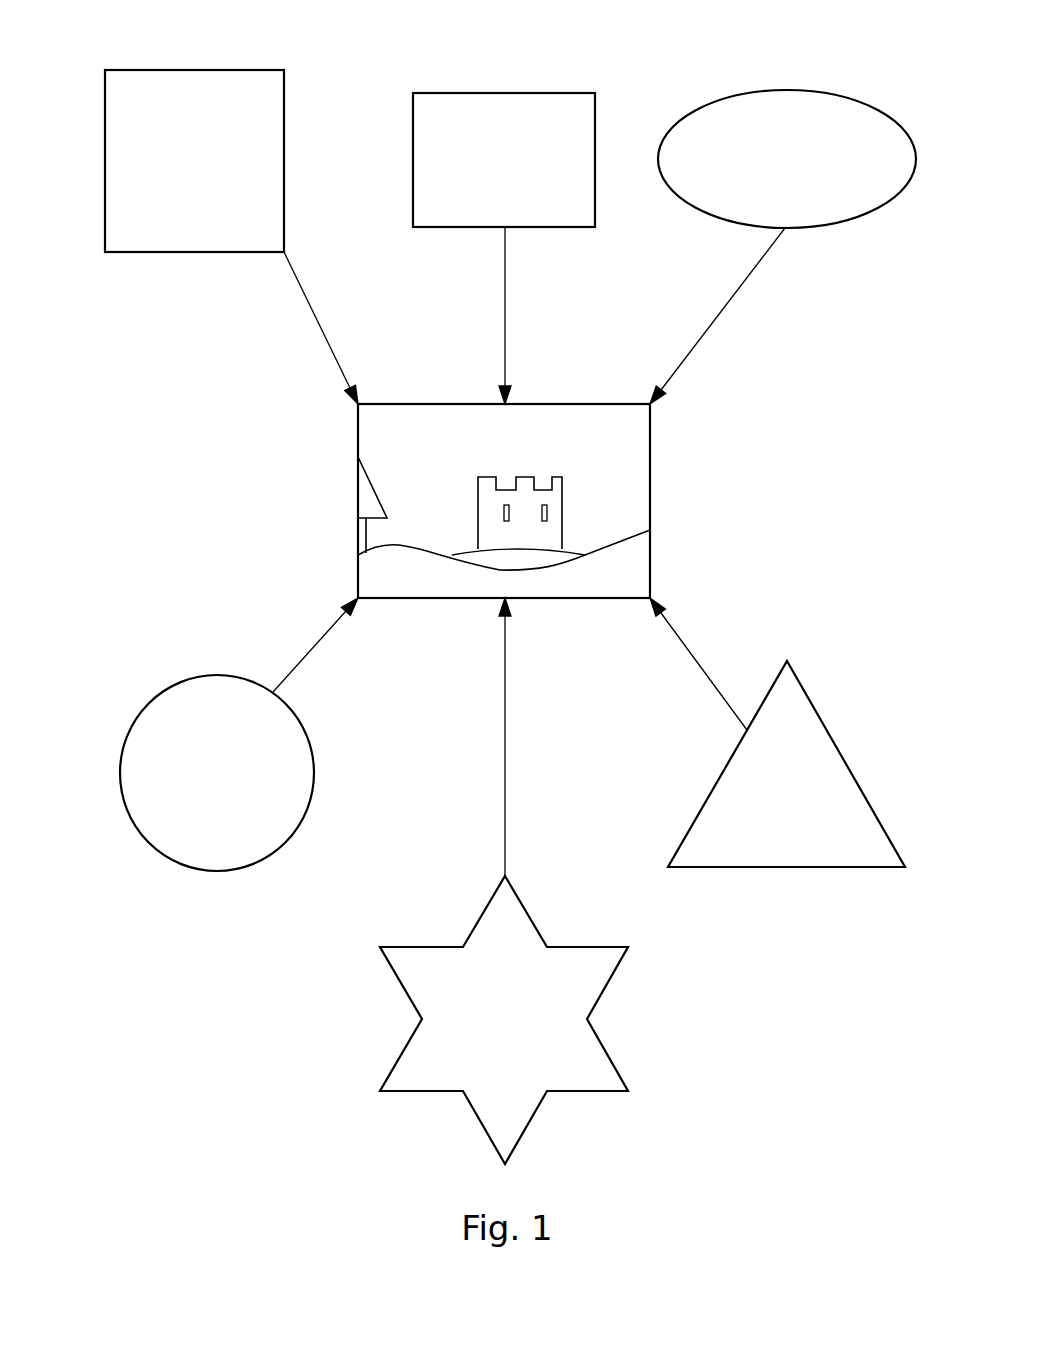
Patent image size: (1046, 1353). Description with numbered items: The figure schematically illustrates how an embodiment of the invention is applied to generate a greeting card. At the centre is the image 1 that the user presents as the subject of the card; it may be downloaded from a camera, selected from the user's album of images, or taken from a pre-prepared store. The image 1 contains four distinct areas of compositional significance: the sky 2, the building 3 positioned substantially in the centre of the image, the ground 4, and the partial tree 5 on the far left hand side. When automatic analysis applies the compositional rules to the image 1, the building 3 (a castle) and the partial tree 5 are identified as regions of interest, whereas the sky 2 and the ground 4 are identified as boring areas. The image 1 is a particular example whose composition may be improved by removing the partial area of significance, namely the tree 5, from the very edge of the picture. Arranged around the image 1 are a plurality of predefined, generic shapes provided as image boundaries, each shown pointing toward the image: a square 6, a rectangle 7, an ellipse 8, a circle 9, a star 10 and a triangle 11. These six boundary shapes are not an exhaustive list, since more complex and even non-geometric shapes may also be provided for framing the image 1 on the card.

The image 1 is at (650, 448).
The sky 2 is at (383, 439).
The building 3 is at (558, 511).
The ground 4 is at (610, 584).
The partial tree 5 is at (370, 505).
The square 6 is at (186, 70).
The rectangle 7 is at (515, 93).
The ellipse 8 is at (780, 89).
The circle 9 is at (182, 865).
The star 10 is at (400, 995).
The triangle 11 is at (793, 867).